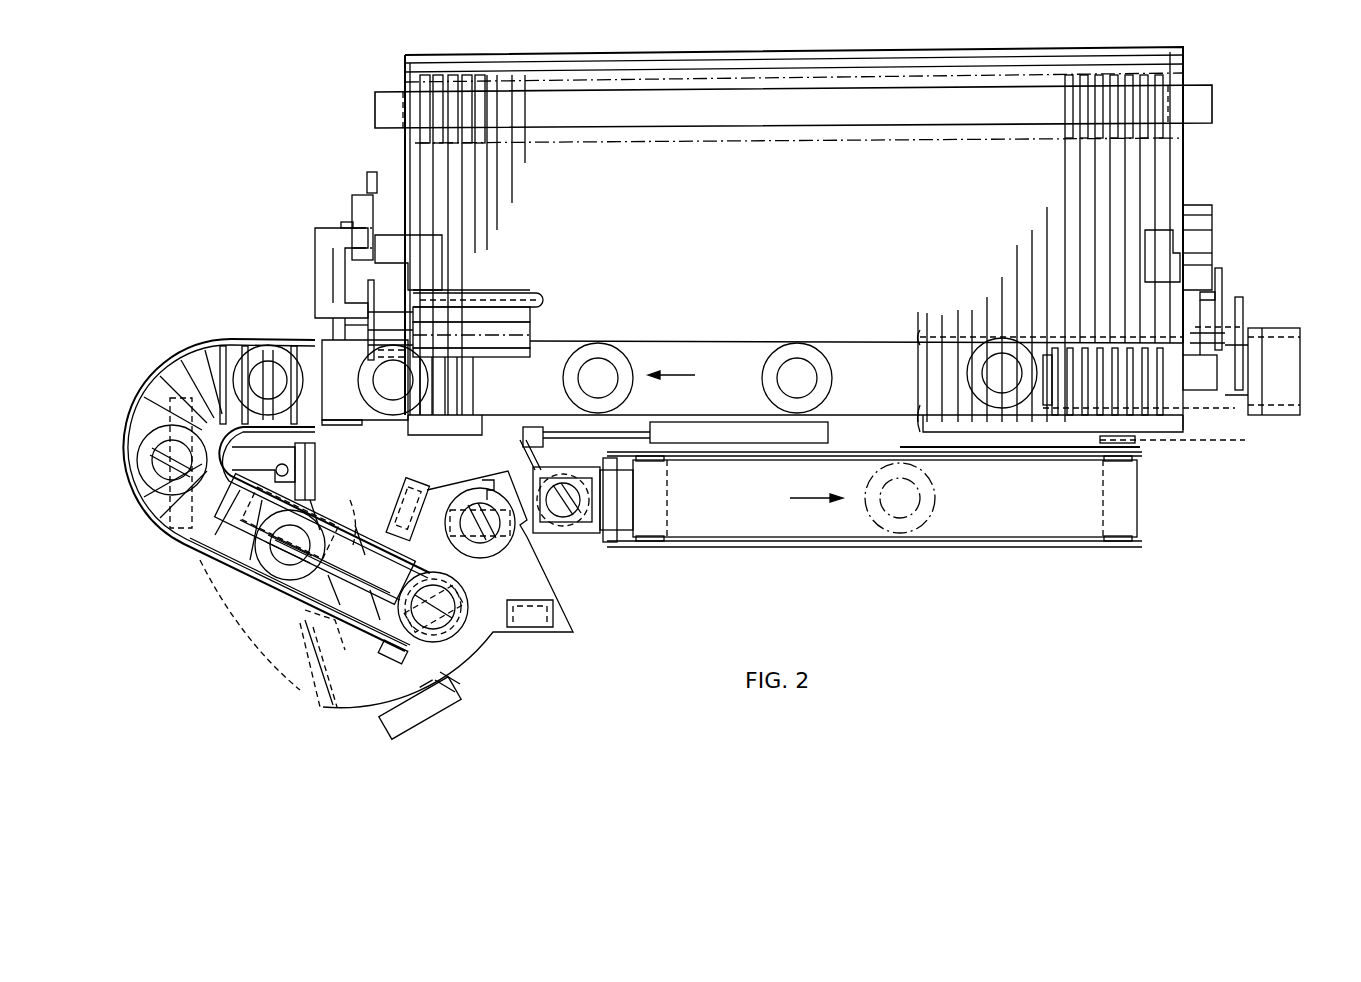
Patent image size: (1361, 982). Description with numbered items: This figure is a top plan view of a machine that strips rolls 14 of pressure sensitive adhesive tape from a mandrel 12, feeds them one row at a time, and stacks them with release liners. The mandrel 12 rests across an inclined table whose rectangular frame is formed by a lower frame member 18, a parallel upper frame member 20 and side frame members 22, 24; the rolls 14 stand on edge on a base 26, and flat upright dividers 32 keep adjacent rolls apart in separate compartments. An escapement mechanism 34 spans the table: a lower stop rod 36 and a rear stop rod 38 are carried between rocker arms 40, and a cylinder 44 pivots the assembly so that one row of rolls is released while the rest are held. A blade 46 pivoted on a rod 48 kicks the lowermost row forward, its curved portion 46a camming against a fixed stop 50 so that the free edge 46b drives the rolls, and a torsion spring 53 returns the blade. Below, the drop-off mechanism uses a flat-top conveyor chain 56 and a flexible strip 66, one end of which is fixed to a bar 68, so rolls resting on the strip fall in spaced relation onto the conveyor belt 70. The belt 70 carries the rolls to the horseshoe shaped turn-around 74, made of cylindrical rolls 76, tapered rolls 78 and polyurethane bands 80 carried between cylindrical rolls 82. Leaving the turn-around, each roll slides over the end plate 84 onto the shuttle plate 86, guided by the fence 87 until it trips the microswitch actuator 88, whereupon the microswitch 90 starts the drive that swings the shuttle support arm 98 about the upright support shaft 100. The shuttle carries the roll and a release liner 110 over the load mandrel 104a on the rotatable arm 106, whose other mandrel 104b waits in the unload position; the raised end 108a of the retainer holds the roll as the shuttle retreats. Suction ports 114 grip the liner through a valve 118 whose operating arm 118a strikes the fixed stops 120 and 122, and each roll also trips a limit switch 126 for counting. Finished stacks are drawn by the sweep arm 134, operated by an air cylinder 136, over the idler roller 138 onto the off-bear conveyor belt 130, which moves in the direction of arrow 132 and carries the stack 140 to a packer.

The mandrel 12 is at (395, 92).
The rolls 14 is at (440, 80).
The lower frame member 18 is at (935, 413).
The upper frame member 20 is at (575, 68).
The side frame member 22 is at (410, 153).
The side frame member 24 is at (1180, 168).
The base 26 is at (791, 186).
The dividers 32 is at (1045, 182).
The escapement mechanism 34 is at (328, 274).
The lower stop rod 36 is at (530, 335).
The rear stop rod 38 is at (540, 296).
The rocker arms 40 is at (342, 325).
The cylinder 44 is at (352, 205).
The blade 46 is at (530, 312).
The curved portion 46a is at (545, 360).
The free edge 46b is at (510, 293).
The rod 48 is at (485, 357).
The fixed stop 50 is at (438, 261).
The torsion spring 53 is at (378, 370).
The conveyor chain 56 is at (1280, 415).
The flexible strip 66 is at (1215, 386).
The fixed bar 68 is at (1245, 310).
The conveyor belt 70 is at (739, 401).
The horseshoe shaped turn-around 74 is at (178, 348).
The cylindrical rolls 76 is at (275, 345).
The tapered rolls 78 is at (150, 400).
The polyurethane bands 80 is at (240, 560).
The cylindrical rolls 82 is at (205, 552).
The end plate 84 is at (387, 563).
The shuttle plate 86 is at (468, 600).
The fence 87 is at (368, 632).
The microswitch actuator 88 is at (440, 652).
The microswitch 90 is at (392, 663).
The shuttle support arm 98 is at (312, 456).
The upright support shaft 100 is at (282, 462).
The load mandrel 104a is at (463, 500).
The mandrel 104b is at (575, 530).
The rotatable arm 106 is at (565, 540).
The raised end 108a is at (470, 505).
The release liner 110 is at (448, 520).
The suction ports 114 is at (495, 630).
The valve 118 is at (308, 655).
The operating arm 118a is at (372, 515).
The fixed stop 120 is at (310, 640).
The fixed stop 122 is at (398, 490).
The limit switch 126 is at (487, 480).
The off-bear conveyor belt 130 is at (1026, 501).
The arrow 132 is at (806, 498).
The sweep arm 134 is at (528, 472).
The air cylinder 136 is at (828, 432).
The idler roller 138 is at (612, 505).
The stack 140 is at (867, 495).